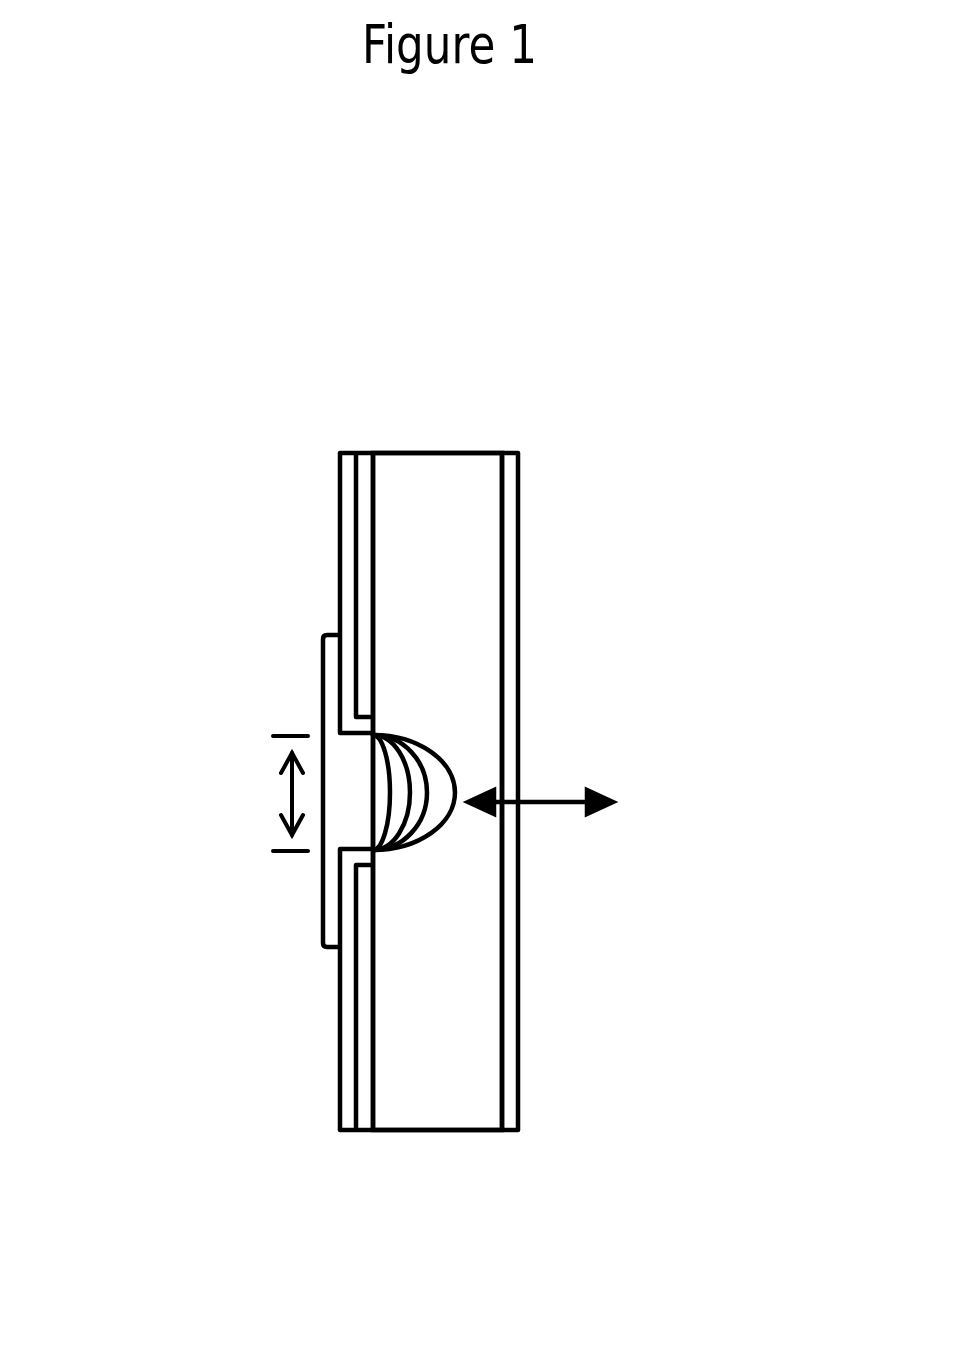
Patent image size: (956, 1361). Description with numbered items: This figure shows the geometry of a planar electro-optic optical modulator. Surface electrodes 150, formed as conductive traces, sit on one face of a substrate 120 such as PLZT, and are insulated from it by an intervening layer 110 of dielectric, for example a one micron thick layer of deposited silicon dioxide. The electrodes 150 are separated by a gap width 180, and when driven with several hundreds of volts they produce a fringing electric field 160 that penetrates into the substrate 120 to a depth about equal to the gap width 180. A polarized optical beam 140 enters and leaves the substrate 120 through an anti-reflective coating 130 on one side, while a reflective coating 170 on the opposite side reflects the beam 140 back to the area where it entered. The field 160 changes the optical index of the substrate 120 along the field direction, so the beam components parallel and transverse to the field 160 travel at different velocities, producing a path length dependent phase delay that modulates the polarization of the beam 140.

The intervening layer of dielectric 110 is at (372, 453).
The substrate 120 is at (485, 468).
The anti-reflective coating 130 is at (520, 550).
The polarized optical beam 140 is at (572, 798).
The surface electrodes 150 is at (338, 488).
The fringing electric field 160 is at (403, 800).
The reflective coating 170 is at (322, 667).
The gap width 180 is at (277, 801).